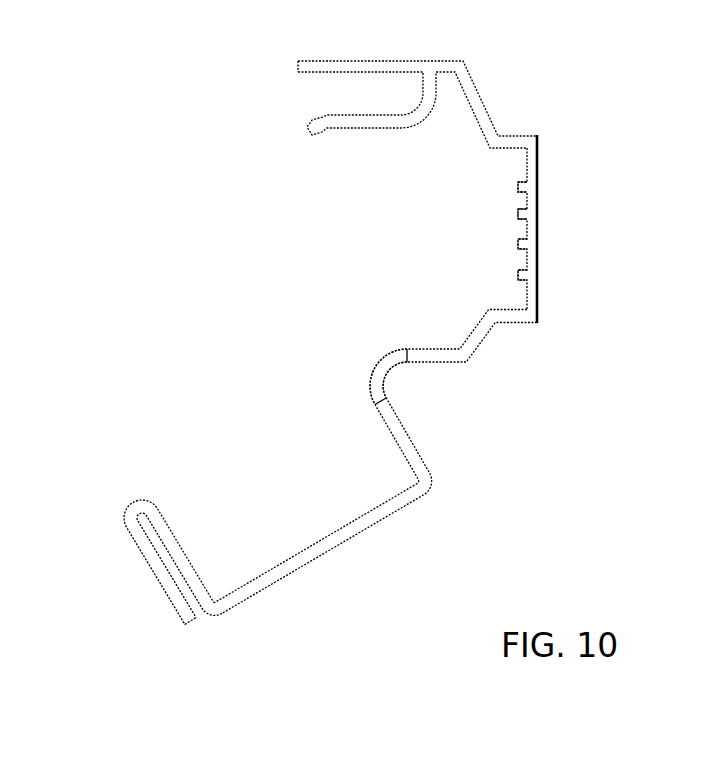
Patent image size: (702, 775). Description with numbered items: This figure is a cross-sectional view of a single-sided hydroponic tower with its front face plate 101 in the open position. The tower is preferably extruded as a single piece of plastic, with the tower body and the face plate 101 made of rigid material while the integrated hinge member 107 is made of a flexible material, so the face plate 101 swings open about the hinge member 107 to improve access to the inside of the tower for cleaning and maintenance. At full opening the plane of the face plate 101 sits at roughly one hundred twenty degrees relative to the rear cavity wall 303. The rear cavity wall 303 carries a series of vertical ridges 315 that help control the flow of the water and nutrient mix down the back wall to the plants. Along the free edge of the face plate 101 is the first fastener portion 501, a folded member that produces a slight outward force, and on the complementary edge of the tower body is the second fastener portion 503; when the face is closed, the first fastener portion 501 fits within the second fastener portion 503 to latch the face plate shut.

The face plate 101 is at (345, 532).
The hinge member 107 is at (379, 362).
The rear cavity wall 303 is at (528, 168).
The vertical ridges 315 is at (518, 183).
The first fastener portion 501 is at (95, 521).
The second fastener portion 503 is at (296, 95).